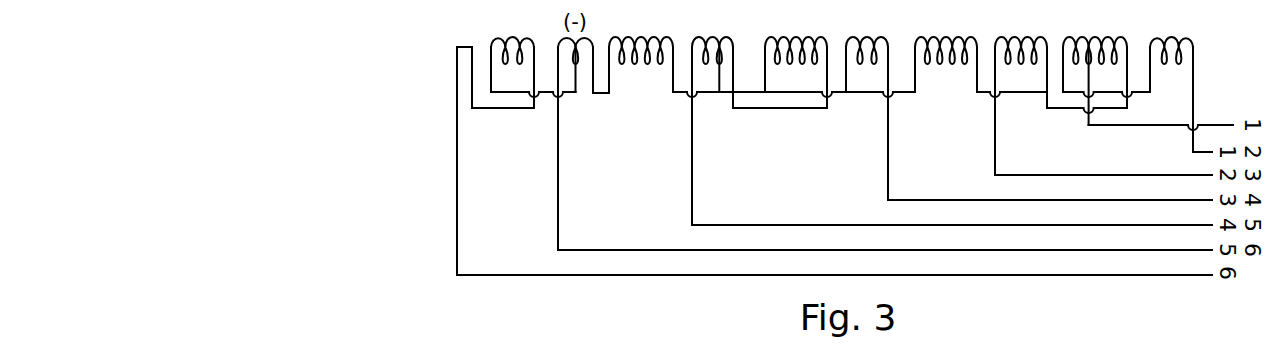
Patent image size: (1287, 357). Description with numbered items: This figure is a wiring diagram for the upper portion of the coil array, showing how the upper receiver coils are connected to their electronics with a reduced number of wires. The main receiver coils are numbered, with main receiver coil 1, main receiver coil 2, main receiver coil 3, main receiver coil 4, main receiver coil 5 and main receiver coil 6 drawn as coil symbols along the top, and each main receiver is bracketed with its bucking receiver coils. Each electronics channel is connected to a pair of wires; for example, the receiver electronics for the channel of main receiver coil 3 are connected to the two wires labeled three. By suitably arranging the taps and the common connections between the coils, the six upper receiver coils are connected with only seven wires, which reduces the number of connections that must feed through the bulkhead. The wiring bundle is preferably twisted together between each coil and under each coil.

The main receiver coil 1 is at (1181, 81).
The main receiver coil 2 is at (1095, 67).
The main receiver coil 3 is at (946, 51).
The main receiver coil 4 is at (796, 59).
The main receiver coil 5 is at (641, 51).
The main receiver coil 6 is at (512, 59).